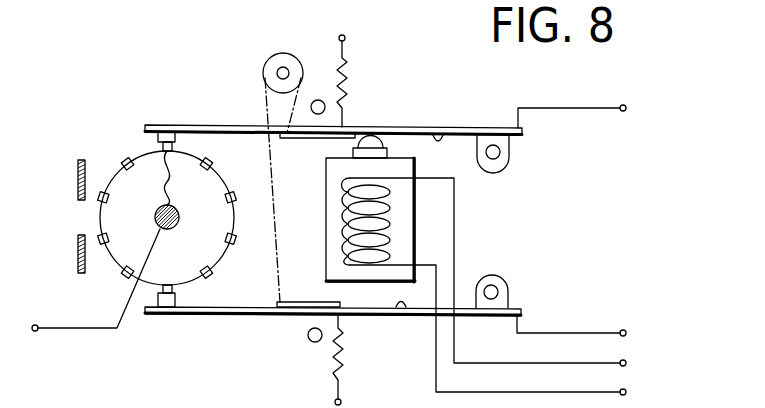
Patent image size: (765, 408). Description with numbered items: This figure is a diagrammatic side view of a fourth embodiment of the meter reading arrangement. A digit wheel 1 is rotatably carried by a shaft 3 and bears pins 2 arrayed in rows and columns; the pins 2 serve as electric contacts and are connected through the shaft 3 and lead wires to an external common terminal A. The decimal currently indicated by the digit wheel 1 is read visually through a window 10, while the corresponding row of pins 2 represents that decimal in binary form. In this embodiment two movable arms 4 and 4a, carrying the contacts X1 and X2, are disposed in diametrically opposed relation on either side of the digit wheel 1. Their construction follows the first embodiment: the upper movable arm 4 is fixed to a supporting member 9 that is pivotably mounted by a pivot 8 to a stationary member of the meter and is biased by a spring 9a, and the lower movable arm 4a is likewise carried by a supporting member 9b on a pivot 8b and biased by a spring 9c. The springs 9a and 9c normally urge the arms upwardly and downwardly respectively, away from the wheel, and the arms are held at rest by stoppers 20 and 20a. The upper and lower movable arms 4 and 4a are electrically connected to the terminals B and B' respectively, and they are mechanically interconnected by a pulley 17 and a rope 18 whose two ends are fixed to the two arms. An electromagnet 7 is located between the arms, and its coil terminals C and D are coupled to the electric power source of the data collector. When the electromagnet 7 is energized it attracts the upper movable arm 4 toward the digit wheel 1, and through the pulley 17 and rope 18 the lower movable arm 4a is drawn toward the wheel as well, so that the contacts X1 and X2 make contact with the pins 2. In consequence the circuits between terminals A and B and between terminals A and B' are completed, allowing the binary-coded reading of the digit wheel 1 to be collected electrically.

The digit wheel 1 is at (117, 180).
The pins 2 is at (125, 156).
The shaft 3 is at (178, 220).
The movable arm 4 is at (213, 125).
The movable arm 4a is at (231, 316).
The electromagnet 7 is at (326, 230).
The pivot 8 is at (500, 152).
The pivot 8b is at (508, 285).
The supporting member 9 is at (442, 128).
The spring 9a is at (347, 80).
The supporting member 9b is at (401, 307).
The spring 9c is at (344, 362).
The window 10 is at (83, 216).
The pulley 17 is at (271, 56).
The rope 18 is at (272, 160).
The stopper 20 is at (320, 100).
The stopper 20a is at (313, 342).
The contact X1 is at (176, 137).
The contact X2 is at (157, 298).
The common terminal A is at (85, 286).
The terminal B is at (586, 113).
The terminal B' is at (589, 332).
The terminal C is at (502, 336).
The terminal D is at (503, 278).